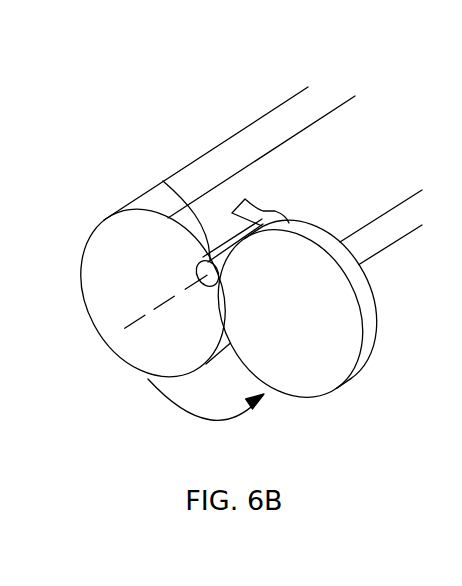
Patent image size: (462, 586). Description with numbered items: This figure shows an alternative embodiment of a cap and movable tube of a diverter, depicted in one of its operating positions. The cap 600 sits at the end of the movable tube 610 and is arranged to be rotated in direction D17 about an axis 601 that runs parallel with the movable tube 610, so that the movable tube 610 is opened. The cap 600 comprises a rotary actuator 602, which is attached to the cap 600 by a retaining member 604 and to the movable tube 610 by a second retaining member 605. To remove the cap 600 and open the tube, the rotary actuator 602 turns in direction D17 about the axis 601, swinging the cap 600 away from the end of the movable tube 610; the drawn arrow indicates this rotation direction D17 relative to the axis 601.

The cap 600 is at (272, 323).
The axis 601 is at (116, 334).
The rotary actuator 602 is at (227, 262).
The retaining member 604 is at (172, 215).
The retaining member 605 is at (265, 212).
The movable tube 610 is at (243, 150).
The direction D17 is at (206, 413).